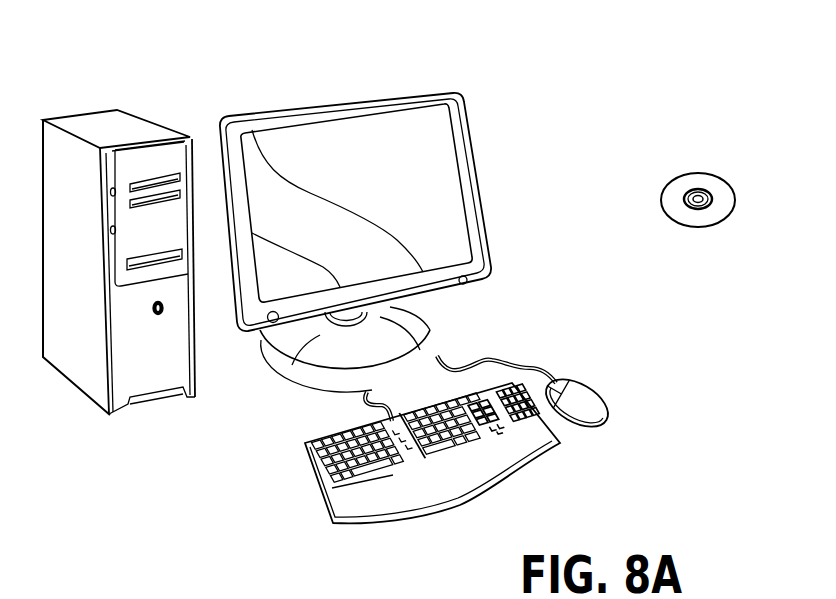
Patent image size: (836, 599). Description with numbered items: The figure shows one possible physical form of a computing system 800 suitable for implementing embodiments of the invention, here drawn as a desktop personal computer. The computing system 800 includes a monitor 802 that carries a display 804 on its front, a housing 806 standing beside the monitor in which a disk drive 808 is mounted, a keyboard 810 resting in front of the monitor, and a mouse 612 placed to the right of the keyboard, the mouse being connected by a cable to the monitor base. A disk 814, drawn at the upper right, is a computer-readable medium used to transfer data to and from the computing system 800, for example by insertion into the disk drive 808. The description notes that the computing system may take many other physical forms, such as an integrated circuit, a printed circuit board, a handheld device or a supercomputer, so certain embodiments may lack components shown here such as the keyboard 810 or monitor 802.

The computing system 800 is at (649, 63).
The monitor 802 is at (483, 208).
The display 804 is at (430, 137).
The housing 806 is at (105, 128).
The disk drive 808 is at (170, 257).
The keyboard 810 is at (316, 483).
The mouse 612 is at (600, 391).
The disk 814 is at (720, 173).